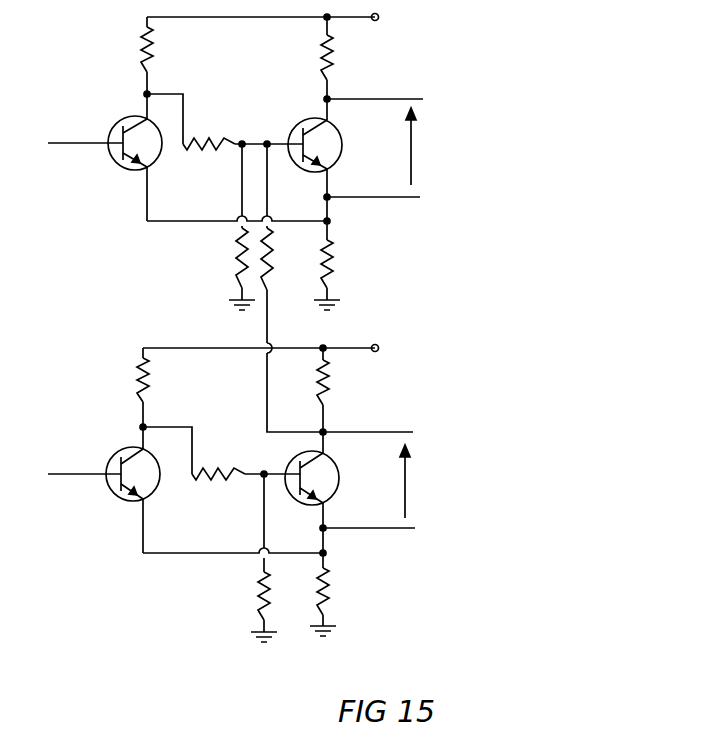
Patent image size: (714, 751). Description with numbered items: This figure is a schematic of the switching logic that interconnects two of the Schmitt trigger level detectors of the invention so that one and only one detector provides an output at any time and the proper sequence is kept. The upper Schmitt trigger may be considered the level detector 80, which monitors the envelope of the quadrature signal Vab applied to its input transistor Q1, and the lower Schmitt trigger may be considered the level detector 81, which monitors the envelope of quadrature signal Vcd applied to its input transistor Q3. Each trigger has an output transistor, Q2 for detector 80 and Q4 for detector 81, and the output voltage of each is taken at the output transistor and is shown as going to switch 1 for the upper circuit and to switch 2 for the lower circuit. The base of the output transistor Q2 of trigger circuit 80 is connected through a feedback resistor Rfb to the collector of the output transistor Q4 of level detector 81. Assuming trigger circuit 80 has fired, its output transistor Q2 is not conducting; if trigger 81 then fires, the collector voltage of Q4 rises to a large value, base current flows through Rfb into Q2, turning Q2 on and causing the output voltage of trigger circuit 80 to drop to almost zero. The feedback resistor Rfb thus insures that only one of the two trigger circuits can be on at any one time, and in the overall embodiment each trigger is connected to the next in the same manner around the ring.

The level detector 80 is at (260, 76).
The level detector 81 is at (226, 397).
The feedback resistor Rfb is at (278, 243).
The transistor Q1 is at (113, 147).
The output transistor Q2 is at (325, 145).
The transistor Q3 is at (111, 478).
The output transistor Q4 is at (322, 478).
The output to switch 1 is at (476, 146).
The output to switch 2 is at (470, 481).